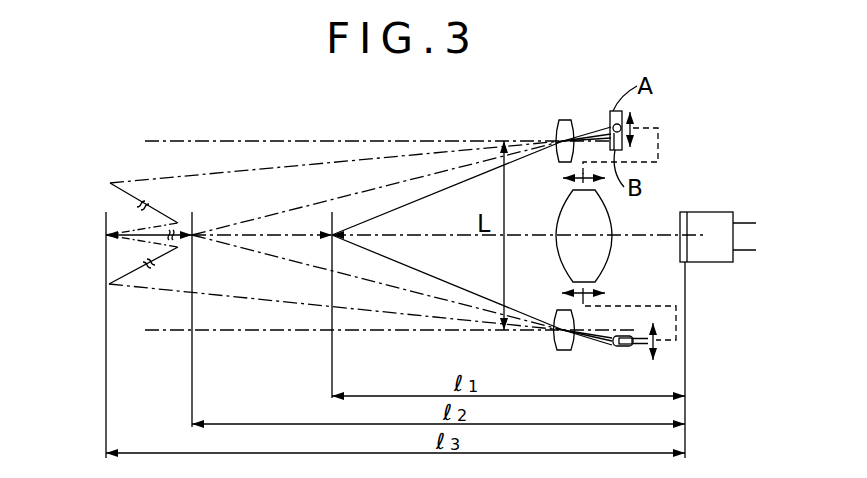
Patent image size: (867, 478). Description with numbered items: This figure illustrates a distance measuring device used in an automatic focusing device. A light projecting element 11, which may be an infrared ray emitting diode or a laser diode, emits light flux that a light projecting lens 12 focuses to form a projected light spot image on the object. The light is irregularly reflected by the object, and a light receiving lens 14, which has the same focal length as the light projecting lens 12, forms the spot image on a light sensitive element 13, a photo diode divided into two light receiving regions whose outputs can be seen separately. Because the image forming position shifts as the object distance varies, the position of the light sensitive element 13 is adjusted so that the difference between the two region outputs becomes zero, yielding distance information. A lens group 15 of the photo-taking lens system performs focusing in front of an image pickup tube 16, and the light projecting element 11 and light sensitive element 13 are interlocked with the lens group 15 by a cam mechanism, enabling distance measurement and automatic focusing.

The light projecting element 11 is at (627, 348).
The light projecting lens 12 is at (557, 310).
The light sensitive element 13 is at (621, 149).
The light receiving lens 14 is at (562, 160).
The lens group 15 is at (596, 263).
The image pickup tube 16 is at (722, 262).